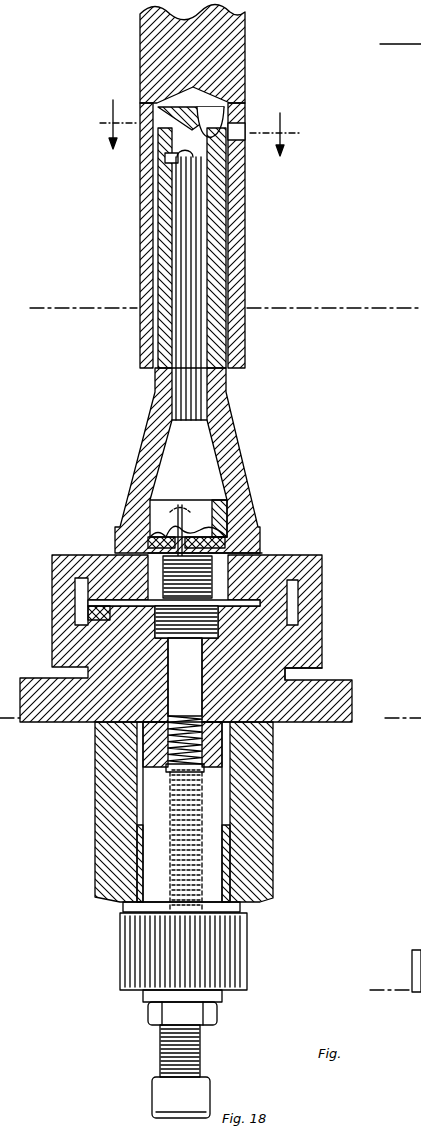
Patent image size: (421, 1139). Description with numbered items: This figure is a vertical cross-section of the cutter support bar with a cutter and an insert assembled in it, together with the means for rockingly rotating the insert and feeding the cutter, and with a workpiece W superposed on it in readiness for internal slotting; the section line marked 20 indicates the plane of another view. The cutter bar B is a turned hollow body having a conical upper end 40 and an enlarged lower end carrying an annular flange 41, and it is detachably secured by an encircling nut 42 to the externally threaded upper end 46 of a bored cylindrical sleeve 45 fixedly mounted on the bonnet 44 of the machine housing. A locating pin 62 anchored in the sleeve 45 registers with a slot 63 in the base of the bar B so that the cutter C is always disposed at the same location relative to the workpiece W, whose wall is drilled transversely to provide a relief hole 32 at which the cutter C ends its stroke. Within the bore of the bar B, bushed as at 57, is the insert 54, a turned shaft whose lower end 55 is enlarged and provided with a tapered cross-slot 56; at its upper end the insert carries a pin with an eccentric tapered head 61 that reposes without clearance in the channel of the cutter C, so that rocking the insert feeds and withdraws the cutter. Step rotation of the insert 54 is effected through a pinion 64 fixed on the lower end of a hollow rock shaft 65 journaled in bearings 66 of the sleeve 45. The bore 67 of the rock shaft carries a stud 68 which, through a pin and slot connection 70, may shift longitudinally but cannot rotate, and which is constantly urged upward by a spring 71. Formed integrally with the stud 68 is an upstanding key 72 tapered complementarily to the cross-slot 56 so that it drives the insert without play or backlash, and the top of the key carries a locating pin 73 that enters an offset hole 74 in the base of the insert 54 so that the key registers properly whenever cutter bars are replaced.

The workpiece W is at (247, 47).
The relief hole 32 is at (247, 126).
The section line 20 is at (194, 120).
The conical upper end 40 is at (178, 108).
The cutter C is at (205, 148).
The cutter bar B is at (255, 508).
The tapered head 61 is at (170, 160).
The insert 54 is at (182, 222).
The bushing 57 is at (232, 525).
The offset hole 74 is at (175, 510).
The lower end 55 is at (150, 523).
The locating pin 73 is at (145, 546).
The key 72 is at (222, 557).
The cross-slot 56 is at (243, 567).
The nut 42 is at (323, 632).
The threaded upper end 46 is at (303, 651).
The annular flange 41 is at (292, 598).
The slot 63 is at (86, 600).
The locating pin 62 is at (110, 613).
The pin and slot connection 70 is at (167, 703).
The bonnet 44 is at (412, 718).
The sleeve 45 is at (275, 768).
The bearings 66 is at (140, 677).
The stud 68 is at (203, 707).
The bore 67 is at (202, 740).
The spring 71 is at (166, 763).
The rock shaft 65 is at (213, 879).
The pinion 64 is at (248, 953).